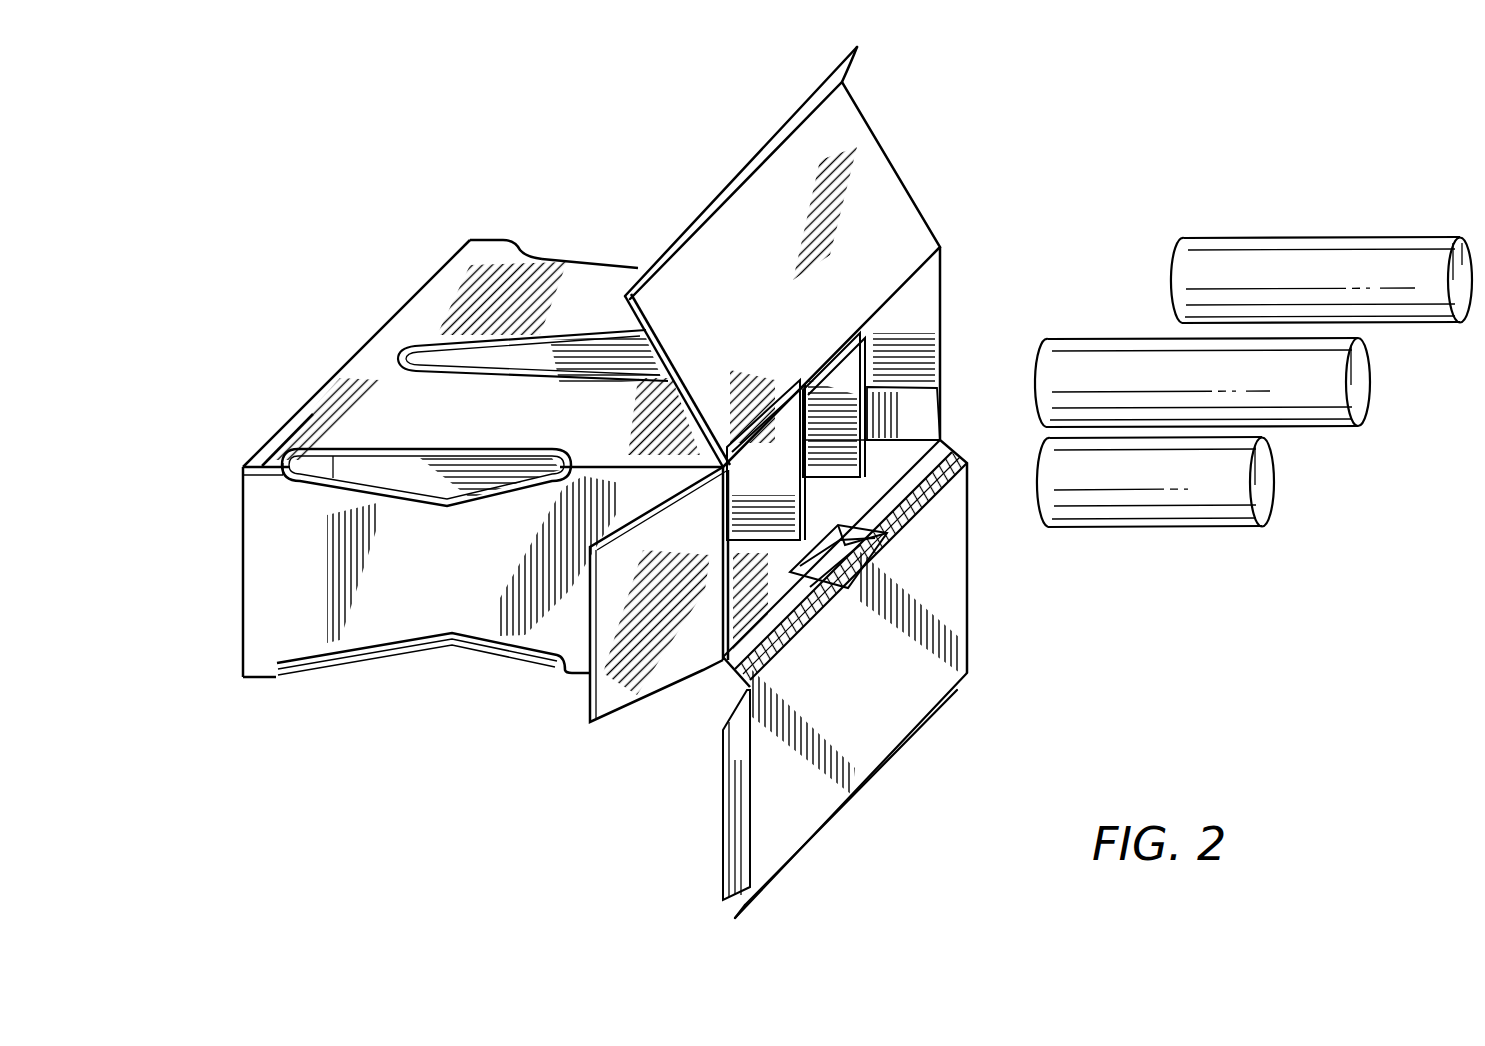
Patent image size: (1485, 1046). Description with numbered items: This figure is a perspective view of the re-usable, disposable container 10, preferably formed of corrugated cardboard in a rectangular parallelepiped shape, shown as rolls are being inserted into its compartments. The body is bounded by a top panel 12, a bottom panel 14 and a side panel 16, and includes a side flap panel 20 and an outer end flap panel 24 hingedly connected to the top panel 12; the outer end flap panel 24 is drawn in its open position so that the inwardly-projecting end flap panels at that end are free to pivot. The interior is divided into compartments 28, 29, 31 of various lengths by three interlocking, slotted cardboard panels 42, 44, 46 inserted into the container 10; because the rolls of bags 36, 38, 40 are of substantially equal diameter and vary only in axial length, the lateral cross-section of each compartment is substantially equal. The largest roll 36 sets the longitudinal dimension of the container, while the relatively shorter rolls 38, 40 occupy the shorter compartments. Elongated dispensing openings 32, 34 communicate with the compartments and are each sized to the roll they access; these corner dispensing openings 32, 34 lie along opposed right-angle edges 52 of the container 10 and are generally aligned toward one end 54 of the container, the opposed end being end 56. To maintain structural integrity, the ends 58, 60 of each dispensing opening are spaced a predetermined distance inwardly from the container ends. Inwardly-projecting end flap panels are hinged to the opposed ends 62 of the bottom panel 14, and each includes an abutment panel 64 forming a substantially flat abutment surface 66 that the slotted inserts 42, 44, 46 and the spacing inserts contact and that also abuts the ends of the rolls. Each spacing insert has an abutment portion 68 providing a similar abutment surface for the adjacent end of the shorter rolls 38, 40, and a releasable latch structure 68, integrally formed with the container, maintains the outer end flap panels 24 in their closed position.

The container 10 is at (436, 236).
The top panel 12 is at (260, 443).
The bottom panel 14 is at (885, 545).
The side panel 16 is at (258, 640).
The side flap panel 20 is at (600, 717).
The outer end flap panel 24 is at (860, 102).
The compartment 28 is at (808, 385).
The compartment 29 is at (940, 316).
The compartment 31 is at (773, 453).
The dispensing opening 32 is at (585, 257).
The dispensing opening 34 is at (390, 447).
The roll of bags 36 is at (1372, 395).
The roll of bags 38 is at (1462, 325).
The roll of bags 40 is at (1277, 495).
The slotted panel 42 is at (810, 513).
The slotted panel 44 is at (873, 455).
The slotted panel 46 is at (790, 493).
The edge 52 is at (488, 240).
The end of container 54 is at (243, 570).
The end of container 56 is at (920, 288).
The end of dispensing opening 58 is at (510, 240).
The end of dispensing opening 60 is at (567, 450).
The end of bottom panel 62 is at (893, 490).
The abutment panel 64 is at (910, 697).
The abutment surface 66 is at (886, 735).
The abutment portion 68 is at (840, 548).